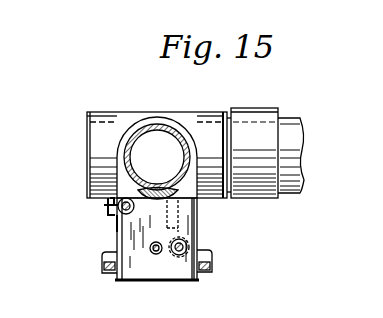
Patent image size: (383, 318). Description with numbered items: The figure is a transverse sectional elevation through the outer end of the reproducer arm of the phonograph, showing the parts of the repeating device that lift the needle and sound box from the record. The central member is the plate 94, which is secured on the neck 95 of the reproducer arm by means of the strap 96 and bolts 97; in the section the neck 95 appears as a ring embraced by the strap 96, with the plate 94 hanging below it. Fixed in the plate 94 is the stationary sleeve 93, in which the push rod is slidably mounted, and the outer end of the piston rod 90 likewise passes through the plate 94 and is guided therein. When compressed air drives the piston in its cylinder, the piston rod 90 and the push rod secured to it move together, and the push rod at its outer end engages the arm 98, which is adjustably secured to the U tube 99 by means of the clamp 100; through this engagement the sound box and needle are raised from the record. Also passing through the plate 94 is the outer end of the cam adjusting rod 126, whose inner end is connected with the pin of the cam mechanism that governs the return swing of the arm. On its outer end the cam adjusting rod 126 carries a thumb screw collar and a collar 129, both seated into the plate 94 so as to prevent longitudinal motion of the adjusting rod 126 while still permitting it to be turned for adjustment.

The piston rod 90 is at (180, 256).
The stationary sleeve 93 is at (185, 258).
The plate 94 is at (136, 278).
The neck of the reproducer arm 95 is at (172, 124).
The strap 96 is at (116, 231).
The bolts 97 is at (212, 253).
The arm 98 is at (198, 229).
The U tube 99 is at (303, 155).
The clamp 100 is at (280, 110).
The cam adjusting rod 126 is at (108, 211).
The collar 129 is at (115, 222).